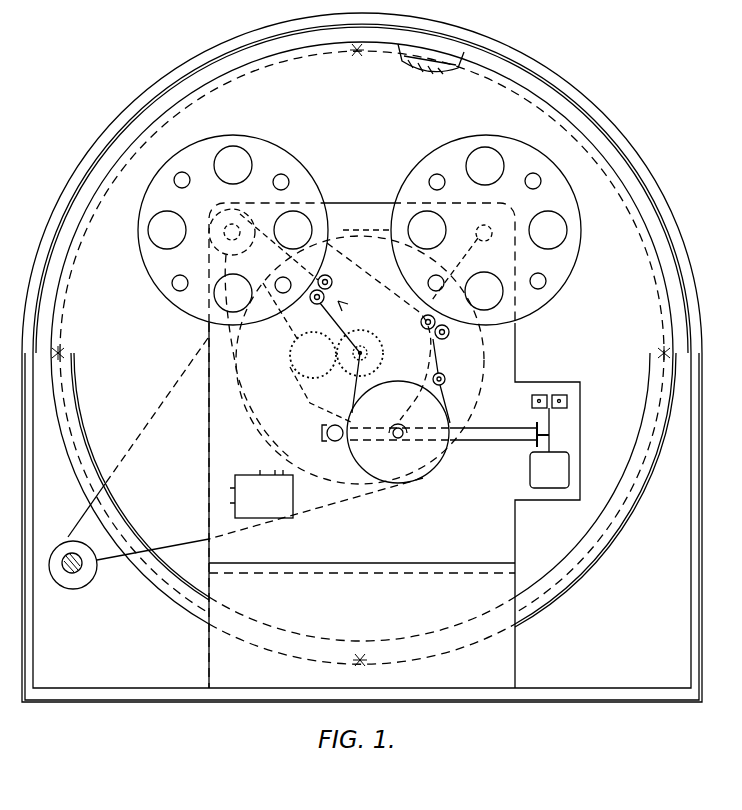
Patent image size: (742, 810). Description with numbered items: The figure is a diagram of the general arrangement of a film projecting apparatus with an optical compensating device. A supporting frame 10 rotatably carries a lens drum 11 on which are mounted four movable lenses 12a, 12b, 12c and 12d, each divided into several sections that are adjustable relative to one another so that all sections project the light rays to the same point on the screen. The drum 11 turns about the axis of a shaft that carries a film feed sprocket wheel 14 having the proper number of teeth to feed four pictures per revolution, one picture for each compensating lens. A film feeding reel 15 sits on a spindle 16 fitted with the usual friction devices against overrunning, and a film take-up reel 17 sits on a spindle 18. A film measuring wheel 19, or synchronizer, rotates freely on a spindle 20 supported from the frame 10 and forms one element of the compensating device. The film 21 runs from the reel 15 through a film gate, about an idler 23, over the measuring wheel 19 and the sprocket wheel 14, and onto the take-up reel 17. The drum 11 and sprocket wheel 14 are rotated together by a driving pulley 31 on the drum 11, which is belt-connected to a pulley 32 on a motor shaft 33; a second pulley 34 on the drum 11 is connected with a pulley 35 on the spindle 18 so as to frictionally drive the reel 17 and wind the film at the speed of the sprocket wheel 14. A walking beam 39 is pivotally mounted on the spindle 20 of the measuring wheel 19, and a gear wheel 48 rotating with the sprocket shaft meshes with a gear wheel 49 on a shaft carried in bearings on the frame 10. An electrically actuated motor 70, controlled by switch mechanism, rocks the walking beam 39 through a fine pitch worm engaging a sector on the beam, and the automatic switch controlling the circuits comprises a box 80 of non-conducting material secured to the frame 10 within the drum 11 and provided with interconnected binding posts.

The supporting frame 10 is at (208, 403).
The lens drum 11 is at (652, 233).
The movable lens 12a is at (127, 157).
The movable lens 12b is at (447, 53).
The movable lens 12c is at (607, 547).
The movable lens 12d is at (140, 583).
The film feed sprocket wheel 14 is at (372, 357).
The film feeding reel 15 is at (433, 158).
The spindle 16 is at (484, 236).
The film take-up reel 17 is at (277, 150).
The spindle 18 is at (237, 234).
The film measuring wheel 19 is at (424, 478).
The spindle 20 is at (398, 439).
The film 21 is at (436, 352).
The idler 23 is at (446, 379).
The driving pulley 31 is at (262, 430).
The pulley 32 is at (70, 541).
The motor shaft 33 is at (69, 574).
The second pulley 34 is at (308, 398).
The pulley 35 is at (207, 246).
The walking beam 39 is at (480, 440).
The gear wheel 48 is at (361, 334).
The gear wheel 49 is at (314, 328).
The motor 70 is at (549, 441).
The box 80 is at (261, 494).